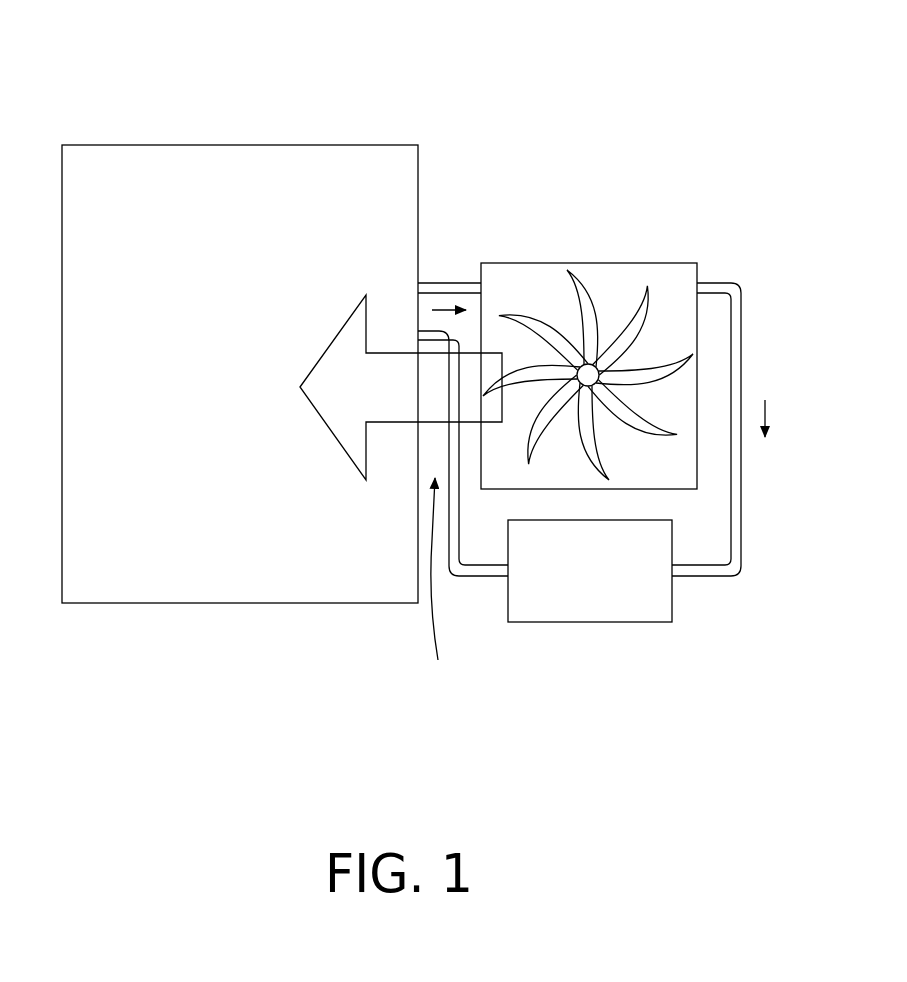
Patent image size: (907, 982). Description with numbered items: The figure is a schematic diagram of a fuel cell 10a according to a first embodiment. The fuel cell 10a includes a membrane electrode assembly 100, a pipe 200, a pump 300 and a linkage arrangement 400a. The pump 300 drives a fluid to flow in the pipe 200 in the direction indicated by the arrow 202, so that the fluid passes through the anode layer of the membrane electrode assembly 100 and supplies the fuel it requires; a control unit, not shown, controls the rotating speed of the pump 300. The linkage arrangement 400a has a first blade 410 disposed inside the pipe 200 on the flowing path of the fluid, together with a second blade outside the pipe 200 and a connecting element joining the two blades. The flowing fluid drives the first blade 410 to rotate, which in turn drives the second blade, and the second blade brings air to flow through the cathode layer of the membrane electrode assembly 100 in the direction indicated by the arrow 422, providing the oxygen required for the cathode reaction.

The fuel cell 10a is at (563, 769).
The membrane electrode assembly 100 is at (372, 165).
The pipe 200 is at (432, 283).
The arrow 202 is at (448, 304).
The pump 300 is at (617, 597).
The linkage arrangement 400a is at (676, 240).
The first blade 410 is at (585, 292).
The arrow 422 is at (339, 441).